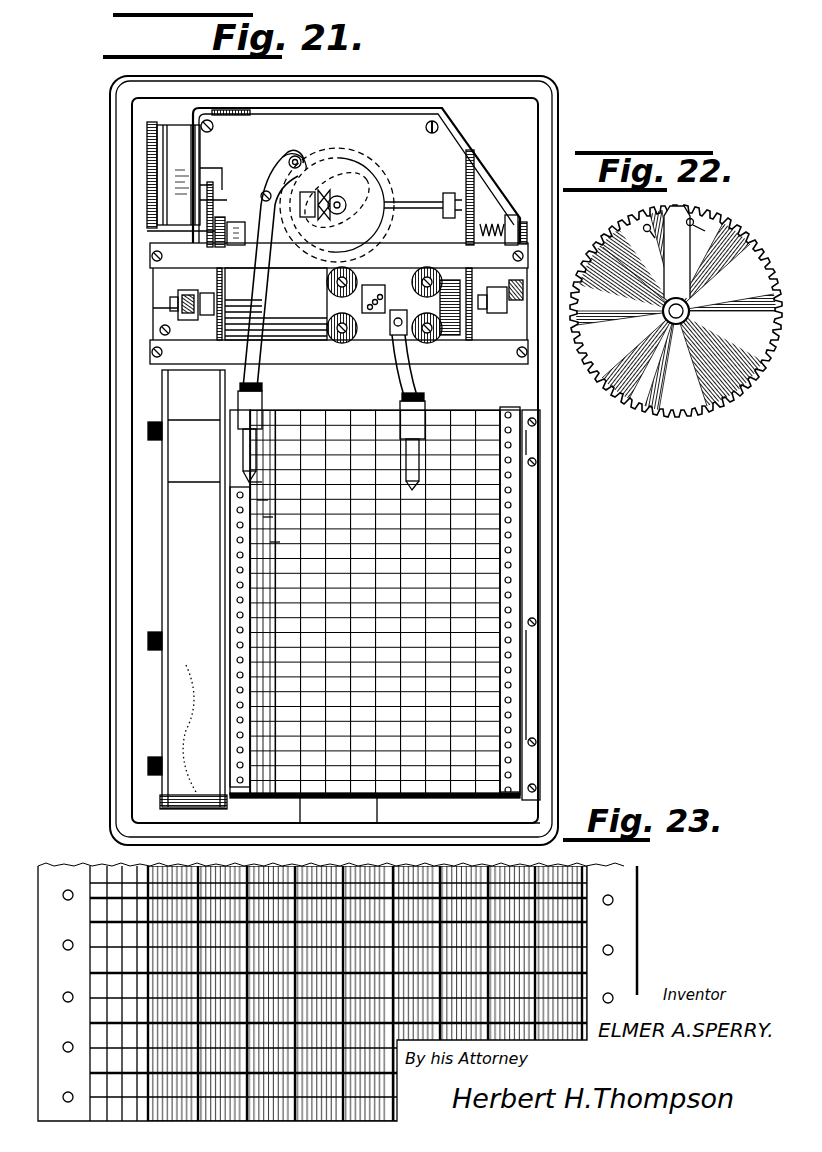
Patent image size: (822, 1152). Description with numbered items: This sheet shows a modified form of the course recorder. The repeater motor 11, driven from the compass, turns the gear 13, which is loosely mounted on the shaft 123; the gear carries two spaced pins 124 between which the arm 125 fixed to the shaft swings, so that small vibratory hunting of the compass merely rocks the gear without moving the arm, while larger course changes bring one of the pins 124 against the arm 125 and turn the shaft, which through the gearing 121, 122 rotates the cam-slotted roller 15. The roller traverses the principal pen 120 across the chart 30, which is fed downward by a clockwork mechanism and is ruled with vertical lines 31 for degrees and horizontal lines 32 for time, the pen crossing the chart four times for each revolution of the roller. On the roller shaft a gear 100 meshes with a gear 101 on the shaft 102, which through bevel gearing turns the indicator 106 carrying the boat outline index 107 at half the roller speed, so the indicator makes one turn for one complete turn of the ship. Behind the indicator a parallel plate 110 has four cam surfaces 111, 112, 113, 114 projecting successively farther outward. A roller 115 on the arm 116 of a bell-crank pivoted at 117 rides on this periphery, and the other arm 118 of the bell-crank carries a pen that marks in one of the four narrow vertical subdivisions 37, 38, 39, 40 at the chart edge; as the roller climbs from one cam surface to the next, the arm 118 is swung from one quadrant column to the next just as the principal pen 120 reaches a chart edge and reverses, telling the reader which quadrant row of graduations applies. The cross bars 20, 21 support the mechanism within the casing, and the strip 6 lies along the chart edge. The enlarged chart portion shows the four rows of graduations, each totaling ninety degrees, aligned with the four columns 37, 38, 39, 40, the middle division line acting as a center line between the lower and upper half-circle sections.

In FIG. 23, the chart feed holes strip 6 is at (575, 900).
In FIG. 21, the step by step repeater motor 11 is at (173, 175).
In FIG. 21, the gear 13 is at (205, 288).
In FIG. 22, the gear 13 is at (690, 388).
In FIG. 21, the roller 15 is at (276, 304).
In FIG. 21, the upper cross bar 20 is at (339, 255).
In FIG. 21, the lower cross bar 21 is at (339, 352).
In FIG. 21, the chart 30 is at (375, 602).
In FIG. 23, the chart 30 is at (337, 985).
In FIG. 23, the vertical lines 31 is at (200, 888).
In FIG. 23, the horizontal lines 32 is at (414, 888).
In FIG. 21, the first vertical subdivision 37 is at (252, 482).
In FIG. 23, the first vertical subdivision 37 is at (96, 881).
In FIG. 21, the second vertical subdivision 38 is at (260, 500).
In FIG. 23, the second vertical subdivision 38 is at (112, 913).
In FIG. 21, the third vertical subdivision 39 is at (263, 517).
In FIG. 23, the third vertical subdivision 39 is at (127, 1005).
In FIG. 21, the fourth vertical subdivision 40 is at (270, 542).
In FIG. 23, the fourth vertical subdivision 40 is at (140, 1090).
In FIG. 21, the gear 100 is at (492, 310).
In FIG. 21, the gear 101 is at (475, 163).
In FIG. 21, the shaft 102 is at (409, 200).
In FIG. 21, the indicator 106 is at (383, 173).
In FIG. 21, the boat outline index 107 is at (341, 182).
In FIG. 21, the plate 110 is at (385, 229).
In FIG. 21, the first cam surface 111 is at (296, 181).
In FIG. 21, the second cam surface 112 is at (326, 232).
In FIG. 21, the third cam surface 113 is at (350, 210).
In FIG. 21, the fourth cam surface 114 is at (356, 151).
In FIG. 21, the roller 115 is at (297, 155).
In FIG. 21, the arm of bell-crank 116 is at (287, 159).
In FIG. 21, the pivot 117 is at (265, 190).
In FIG. 21, the pen arm 118 is at (262, 374).
In FIG. 21, the pen 120 is at (429, 418).
In FIG. 21, the gearing 121 is at (226, 226).
In FIG. 21, the gearing 122 is at (224, 279).
In FIG. 21, the shaft 123 is at (226, 245).
In FIG. 22, the shaft 123 is at (676, 326).
In FIG. 21, the spaced pins 124 is at (211, 212).
In FIG. 22, the spaced pins 124 is at (680, 240).
In FIG. 21, the arm 125 is at (200, 233).
In FIG. 22, the arm 125 is at (676, 281).